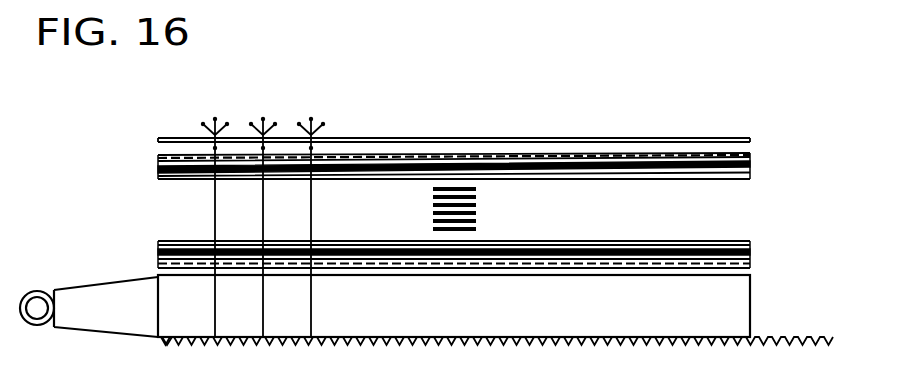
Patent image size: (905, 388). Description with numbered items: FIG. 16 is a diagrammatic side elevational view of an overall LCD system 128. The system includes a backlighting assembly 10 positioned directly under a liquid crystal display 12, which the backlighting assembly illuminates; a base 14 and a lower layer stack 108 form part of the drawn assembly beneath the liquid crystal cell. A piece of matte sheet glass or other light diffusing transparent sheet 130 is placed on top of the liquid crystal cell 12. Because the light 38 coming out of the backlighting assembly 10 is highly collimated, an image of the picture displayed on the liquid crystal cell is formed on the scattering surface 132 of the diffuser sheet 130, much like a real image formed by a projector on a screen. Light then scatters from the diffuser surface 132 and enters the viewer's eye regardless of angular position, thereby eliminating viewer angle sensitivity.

The backlighting assembly 10 is at (132, 263).
The liquid crystal display 12 is at (757, 157).
The base 14 is at (748, 306).
The light 38 is at (220, 213).
The lower layer stack 108 is at (745, 266).
The LCD system 128 is at (563, 113).
The light diffusing transparent sheet 130 is at (753, 139).
The scattering surface 132 is at (174, 143).